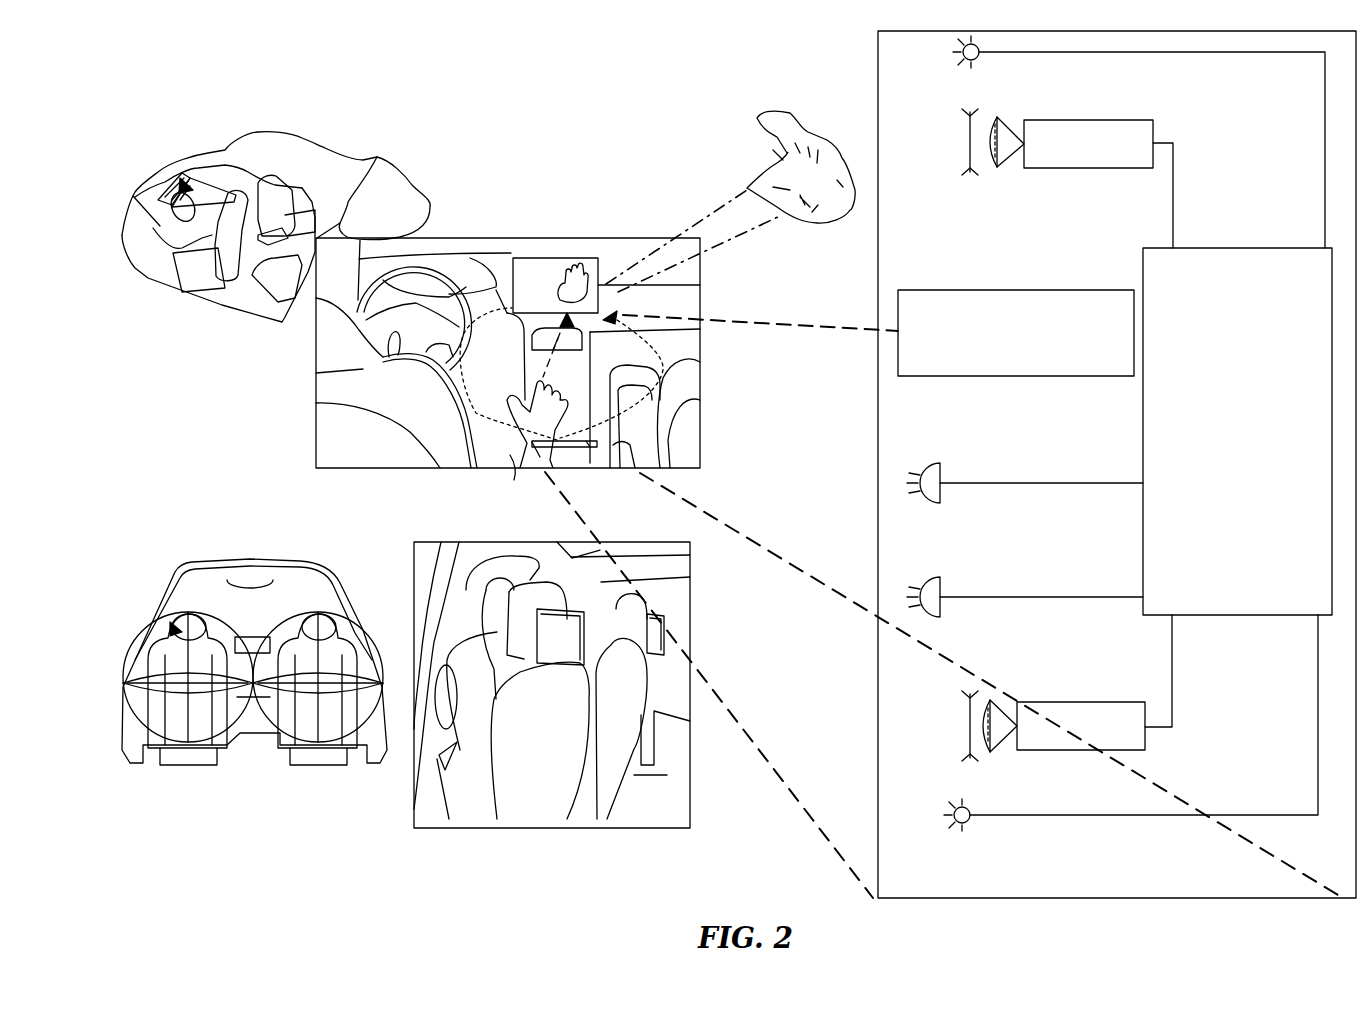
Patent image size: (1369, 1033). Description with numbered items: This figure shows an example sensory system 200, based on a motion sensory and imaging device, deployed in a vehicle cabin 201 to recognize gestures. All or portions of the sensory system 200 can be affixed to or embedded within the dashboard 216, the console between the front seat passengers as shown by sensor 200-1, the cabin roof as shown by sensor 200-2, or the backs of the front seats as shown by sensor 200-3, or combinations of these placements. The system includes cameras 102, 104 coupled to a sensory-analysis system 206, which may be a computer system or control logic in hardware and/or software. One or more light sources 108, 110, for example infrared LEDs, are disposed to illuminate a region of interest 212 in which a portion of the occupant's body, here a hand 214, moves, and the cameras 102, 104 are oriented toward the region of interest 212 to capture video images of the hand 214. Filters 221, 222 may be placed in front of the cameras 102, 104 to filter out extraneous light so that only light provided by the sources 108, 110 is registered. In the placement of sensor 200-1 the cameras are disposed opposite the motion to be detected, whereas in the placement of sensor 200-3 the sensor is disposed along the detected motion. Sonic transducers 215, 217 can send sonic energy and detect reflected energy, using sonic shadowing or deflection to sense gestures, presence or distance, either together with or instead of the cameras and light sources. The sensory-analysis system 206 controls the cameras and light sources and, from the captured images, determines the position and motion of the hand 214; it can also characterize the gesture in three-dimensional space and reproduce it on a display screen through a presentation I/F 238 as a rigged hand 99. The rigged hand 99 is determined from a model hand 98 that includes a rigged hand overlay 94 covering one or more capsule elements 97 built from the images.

The rigged hand overlay 94 is at (835, 135).
The capsule elements 97 is at (847, 160).
The model hand 98 is at (791, 135).
The rigged hand 99 is at (577, 284).
The camera 102 is at (1107, 120).
The camera 104 is at (1082, 752).
The light source 108 is at (978, 58).
The light source 110 is at (969, 822).
The sensory system 200 is at (1284, 101).
The sensor 200-1 is at (530, 468).
The sensor 200-2 is at (247, 565).
The sensor 200-3 is at (333, 683).
The vehicle cabin 201 is at (686, 169).
The sensory-analysis system 206 is at (1262, 247).
The region of interest 212 is at (185, 186).
The hand 214 is at (511, 452).
The sonic transducer 215 is at (936, 464).
The dashboard 216 is at (497, 234).
The sonic transducer 217 is at (935, 579).
The filter 221 is at (968, 136).
The filter 222 is at (968, 718).
The presentation I/F 238 is at (950, 284).